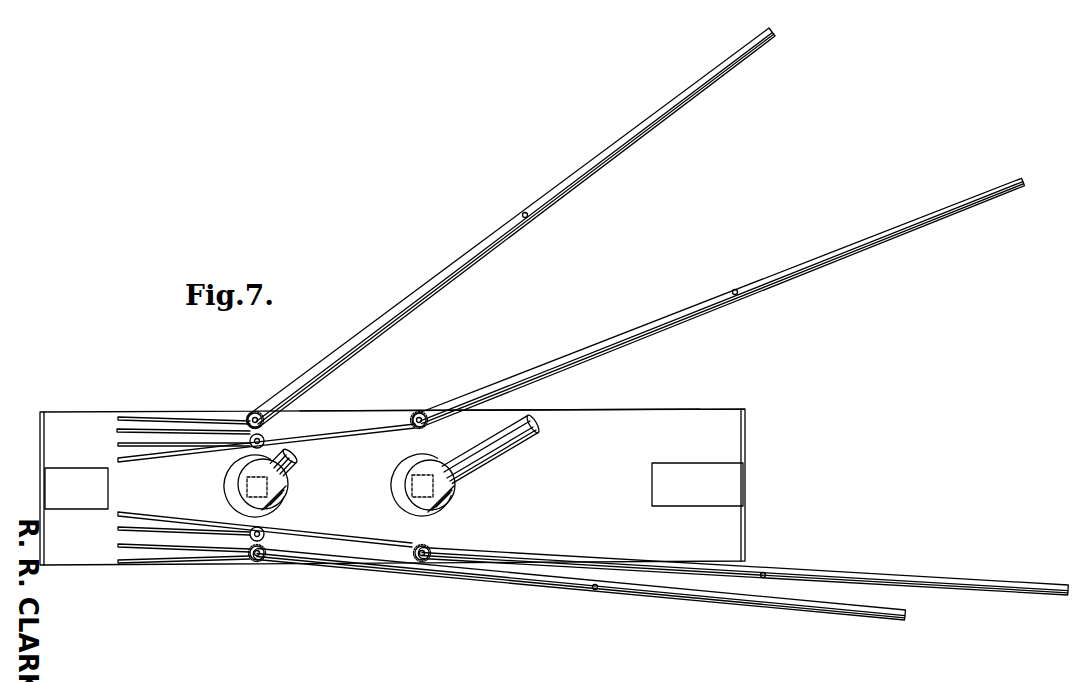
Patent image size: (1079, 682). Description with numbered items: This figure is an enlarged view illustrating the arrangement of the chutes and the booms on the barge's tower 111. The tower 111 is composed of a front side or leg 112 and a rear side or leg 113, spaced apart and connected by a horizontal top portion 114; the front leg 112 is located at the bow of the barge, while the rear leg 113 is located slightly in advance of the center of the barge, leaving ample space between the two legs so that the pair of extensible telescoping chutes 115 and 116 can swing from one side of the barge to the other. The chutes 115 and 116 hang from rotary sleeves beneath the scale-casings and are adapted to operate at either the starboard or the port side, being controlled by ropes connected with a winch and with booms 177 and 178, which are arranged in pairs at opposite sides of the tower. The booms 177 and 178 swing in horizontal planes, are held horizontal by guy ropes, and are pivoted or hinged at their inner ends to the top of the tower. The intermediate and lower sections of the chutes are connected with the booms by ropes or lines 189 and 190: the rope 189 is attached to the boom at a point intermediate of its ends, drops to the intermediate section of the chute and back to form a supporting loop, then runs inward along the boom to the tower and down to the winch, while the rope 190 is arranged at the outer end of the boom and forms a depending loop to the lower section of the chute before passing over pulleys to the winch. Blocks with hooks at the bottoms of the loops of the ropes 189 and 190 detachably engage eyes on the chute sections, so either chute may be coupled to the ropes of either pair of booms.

The tower 111 is at (736, 432).
The front side or leg of the tower 112 is at (745, 512).
The rear side or leg of the tower 113 is at (42, 468).
The horizontal top portion 114 is at (635, 411).
The extensible telescoping chute 115 is at (513, 450).
The extensible telescoping chute 116 is at (305, 459).
The boom 177 is at (793, 267).
The boom 178 is at (553, 190).
The rope or line 189 is at (121, 428).
The rope or line 190 is at (140, 417).